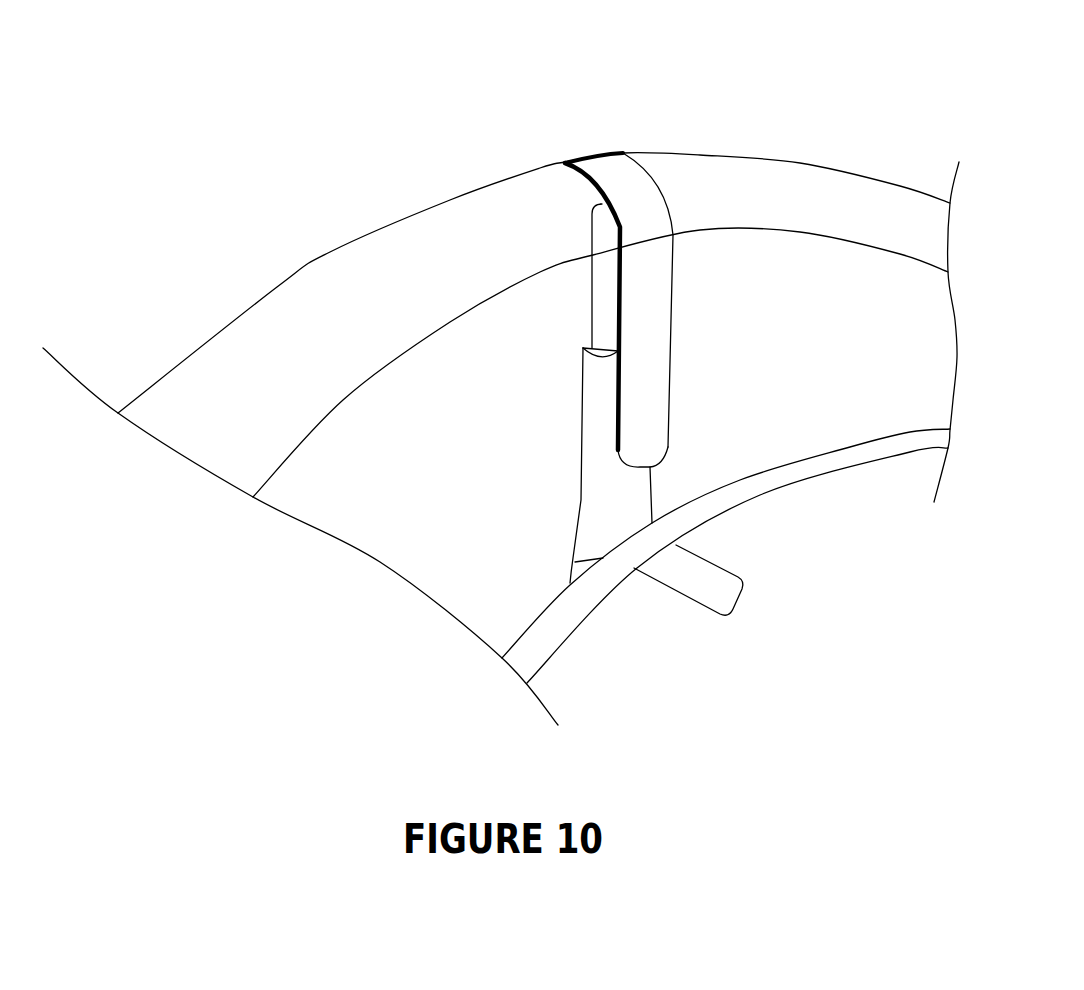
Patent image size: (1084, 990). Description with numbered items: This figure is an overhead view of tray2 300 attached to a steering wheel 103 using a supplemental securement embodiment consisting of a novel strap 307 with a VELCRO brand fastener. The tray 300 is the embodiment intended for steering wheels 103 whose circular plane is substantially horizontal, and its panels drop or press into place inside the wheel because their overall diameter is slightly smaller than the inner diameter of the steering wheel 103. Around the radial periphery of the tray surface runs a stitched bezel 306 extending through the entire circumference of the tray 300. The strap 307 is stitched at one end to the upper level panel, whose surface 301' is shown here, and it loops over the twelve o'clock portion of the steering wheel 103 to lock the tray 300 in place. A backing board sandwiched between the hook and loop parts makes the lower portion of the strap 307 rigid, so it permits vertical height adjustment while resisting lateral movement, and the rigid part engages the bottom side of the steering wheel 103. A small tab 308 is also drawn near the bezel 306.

The steering wheel 103 is at (283, 302).
The tray2 300 is at (694, 366).
The upper level panel side surface 301' is at (891, 372).
The bezel 306 is at (778, 477).
The strap with VELCRO brand fastener 307 is at (601, 419).
The tab 308 is at (680, 582).